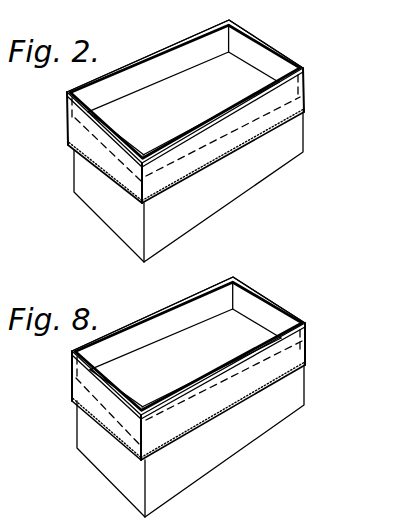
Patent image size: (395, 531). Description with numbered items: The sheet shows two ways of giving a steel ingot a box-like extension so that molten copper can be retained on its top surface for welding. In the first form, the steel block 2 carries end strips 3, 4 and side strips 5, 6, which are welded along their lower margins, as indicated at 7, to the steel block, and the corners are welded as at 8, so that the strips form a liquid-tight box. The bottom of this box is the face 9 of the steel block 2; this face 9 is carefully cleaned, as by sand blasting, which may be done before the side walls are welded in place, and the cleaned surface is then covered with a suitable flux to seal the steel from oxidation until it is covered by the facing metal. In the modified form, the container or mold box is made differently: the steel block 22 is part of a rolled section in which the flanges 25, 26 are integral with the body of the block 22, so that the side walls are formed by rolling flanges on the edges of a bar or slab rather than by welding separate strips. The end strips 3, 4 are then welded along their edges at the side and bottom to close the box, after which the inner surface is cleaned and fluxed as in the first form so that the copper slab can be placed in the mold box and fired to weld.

In FIG. 2, the steel block 2 is at (294, 145).
In FIG. 2, the end strip 3 is at (280, 51).
In FIG. 8, the end strip 3 is at (270, 296).
In FIG. 2, the end strip 4 is at (97, 130).
In FIG. 8, the end strip 4 is at (108, 391).
In FIG. 2, the side strip 5 is at (160, 55).
In FIG. 2, the side strip 6 is at (228, 145).
In FIG. 2, the weld 7 is at (207, 167).
In FIG. 2, the corner weld 8 is at (300, 92).
In FIG. 2, the face 9 is at (236, 78).
In FIG. 8, the steel block 22 is at (298, 398).
In FIG. 8, the flange 25 is at (163, 309).
In FIG. 8, the flange 26 is at (277, 336).